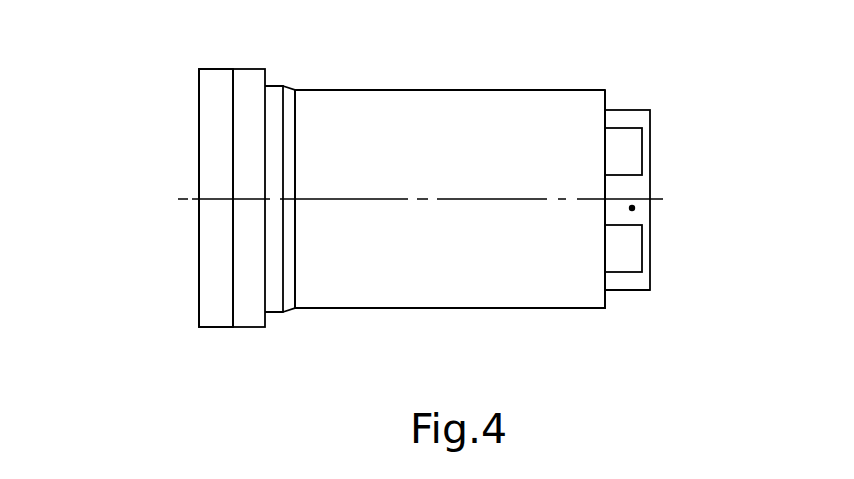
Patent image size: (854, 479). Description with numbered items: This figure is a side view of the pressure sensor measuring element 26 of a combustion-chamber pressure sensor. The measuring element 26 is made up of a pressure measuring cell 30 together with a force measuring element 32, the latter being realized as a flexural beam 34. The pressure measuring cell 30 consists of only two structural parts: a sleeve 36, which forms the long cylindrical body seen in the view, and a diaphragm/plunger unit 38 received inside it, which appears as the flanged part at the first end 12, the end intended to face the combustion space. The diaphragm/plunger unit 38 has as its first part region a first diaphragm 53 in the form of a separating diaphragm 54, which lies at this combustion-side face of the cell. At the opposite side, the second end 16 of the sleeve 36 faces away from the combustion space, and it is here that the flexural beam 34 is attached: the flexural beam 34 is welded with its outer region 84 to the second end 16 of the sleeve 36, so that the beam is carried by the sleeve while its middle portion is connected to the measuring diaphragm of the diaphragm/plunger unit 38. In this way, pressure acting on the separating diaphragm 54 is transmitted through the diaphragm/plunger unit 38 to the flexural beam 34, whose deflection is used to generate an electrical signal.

The first end 12 is at (186, 100).
The second end 16 is at (655, 91).
The pressure sensor measuring element 26 is at (624, 326).
The pressure measuring cell 30 is at (348, 160).
The force measuring element 32 is at (615, 190).
The flexural beam 34 is at (634, 209).
The sleeve 36 is at (507, 82).
The diaphragm/plunger unit 38 is at (212, 321).
The first diaphragm 53 is at (186, 219).
The separating diaphragm 54 is at (198, 172).
The outer region 84 is at (641, 293).